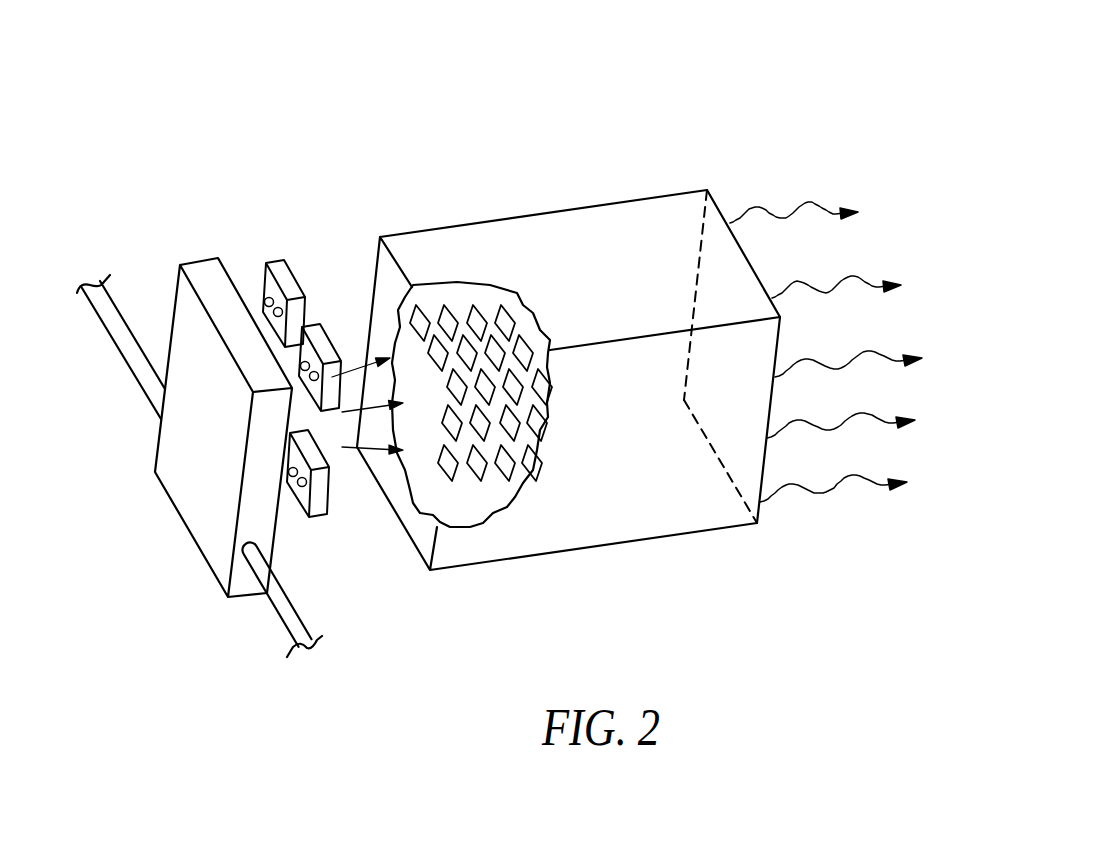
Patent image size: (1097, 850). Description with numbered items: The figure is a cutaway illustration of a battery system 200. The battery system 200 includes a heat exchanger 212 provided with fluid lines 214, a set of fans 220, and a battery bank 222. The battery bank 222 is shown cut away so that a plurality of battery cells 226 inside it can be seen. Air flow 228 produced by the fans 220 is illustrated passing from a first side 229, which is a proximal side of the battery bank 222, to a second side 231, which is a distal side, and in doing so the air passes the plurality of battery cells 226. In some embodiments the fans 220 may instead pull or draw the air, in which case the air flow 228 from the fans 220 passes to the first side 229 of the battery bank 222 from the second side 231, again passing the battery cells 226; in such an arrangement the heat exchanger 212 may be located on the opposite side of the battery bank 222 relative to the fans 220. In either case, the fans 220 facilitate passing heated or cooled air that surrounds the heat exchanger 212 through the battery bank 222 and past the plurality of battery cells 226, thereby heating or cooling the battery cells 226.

The battery system 200 is at (675, 58).
The heat exchanger 212 is at (200, 502).
The fluid lines 214 is at (103, 327).
The fans 220 is at (322, 337).
The battery bank 222 is at (612, 547).
The battery cells 226 is at (450, 310).
The air flow 228 is at (830, 294).
The first side 229 is at (426, 526).
The second side 231 is at (743, 447).